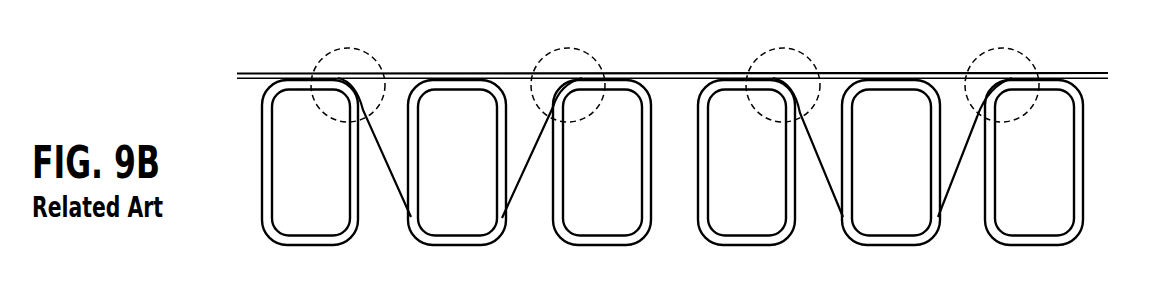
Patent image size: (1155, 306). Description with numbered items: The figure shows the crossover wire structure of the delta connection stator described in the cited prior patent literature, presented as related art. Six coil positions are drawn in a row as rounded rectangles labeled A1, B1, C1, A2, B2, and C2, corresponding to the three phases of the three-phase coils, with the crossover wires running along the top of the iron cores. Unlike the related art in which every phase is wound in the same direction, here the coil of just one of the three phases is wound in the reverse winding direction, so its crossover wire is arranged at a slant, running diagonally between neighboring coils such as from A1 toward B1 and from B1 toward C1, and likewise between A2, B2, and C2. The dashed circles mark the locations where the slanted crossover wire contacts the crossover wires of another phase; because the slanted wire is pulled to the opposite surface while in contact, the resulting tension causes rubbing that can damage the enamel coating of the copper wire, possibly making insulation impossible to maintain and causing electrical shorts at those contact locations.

The first color sub-pixel electrode A1 is at (310, 162).
The second color sub-pixel electrode B1 is at (457, 162).
The third color sub-pixel electrode C1 is at (602, 162).
The first color sub-pixel electrode A2 is at (746, 162).
The second color sub-pixel electrode B2 is at (891, 162).
The third color sub-pixel electrode C2 is at (1034, 162).